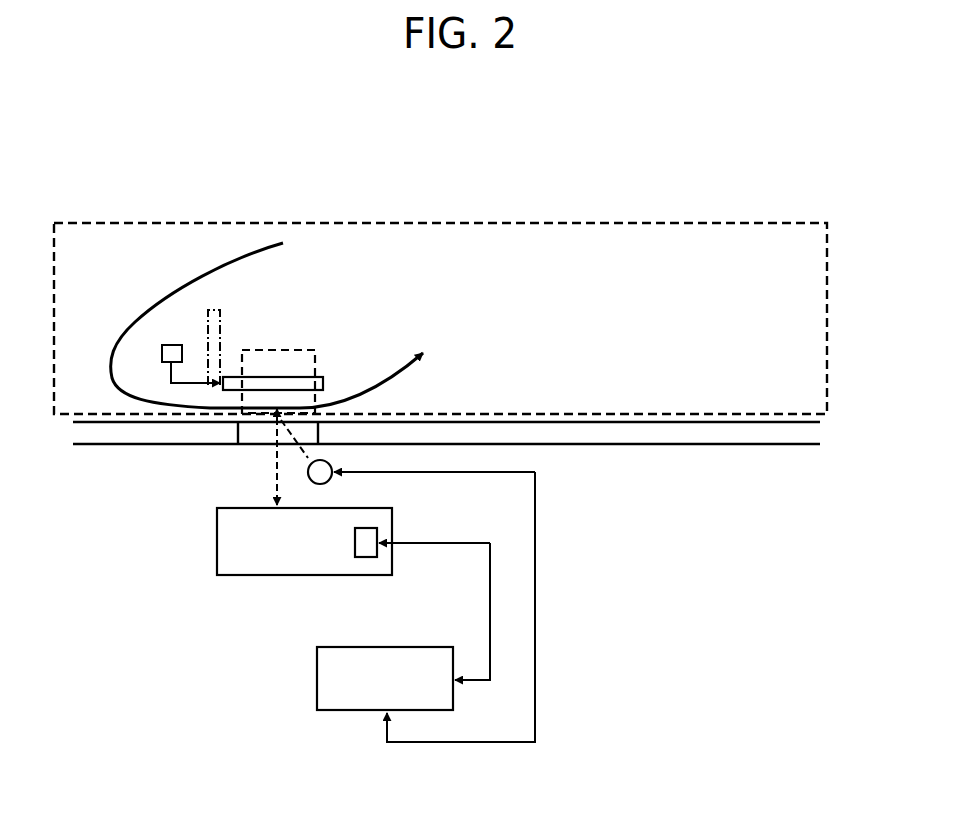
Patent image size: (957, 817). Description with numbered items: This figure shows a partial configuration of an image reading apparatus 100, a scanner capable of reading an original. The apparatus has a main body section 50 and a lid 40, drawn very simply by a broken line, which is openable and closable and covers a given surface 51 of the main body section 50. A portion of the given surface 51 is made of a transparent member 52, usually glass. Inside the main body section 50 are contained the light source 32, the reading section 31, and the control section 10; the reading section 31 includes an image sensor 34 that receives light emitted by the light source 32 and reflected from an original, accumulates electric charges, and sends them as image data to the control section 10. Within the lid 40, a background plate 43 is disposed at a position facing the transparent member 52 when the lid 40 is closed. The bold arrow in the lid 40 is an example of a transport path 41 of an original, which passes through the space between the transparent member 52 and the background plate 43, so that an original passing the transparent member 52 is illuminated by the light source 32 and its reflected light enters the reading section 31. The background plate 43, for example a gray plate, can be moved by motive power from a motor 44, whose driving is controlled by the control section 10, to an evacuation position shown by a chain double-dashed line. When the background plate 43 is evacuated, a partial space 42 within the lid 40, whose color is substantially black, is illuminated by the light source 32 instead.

The image reading apparatus 100 is at (153, 198).
The lid 40 is at (432, 222).
The transport path 41 is at (415, 385).
The space 42 is at (276, 345).
The background plate 43 is at (220, 310).
The motor 44 is at (162, 355).
The given surface 51 is at (795, 422).
The main body section 50 is at (123, 491).
The transparent member 52 is at (247, 445).
The light source 32 is at (327, 483).
The reading section 31 is at (217, 558).
The image sensor 34 is at (379, 532).
The control section 10 is at (365, 645).